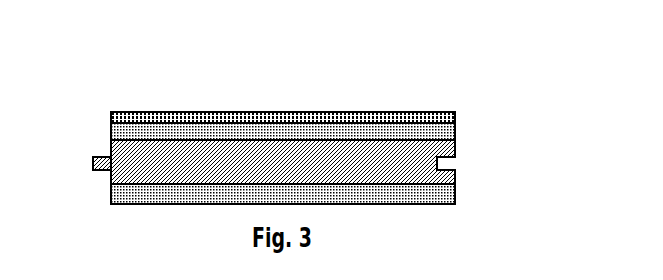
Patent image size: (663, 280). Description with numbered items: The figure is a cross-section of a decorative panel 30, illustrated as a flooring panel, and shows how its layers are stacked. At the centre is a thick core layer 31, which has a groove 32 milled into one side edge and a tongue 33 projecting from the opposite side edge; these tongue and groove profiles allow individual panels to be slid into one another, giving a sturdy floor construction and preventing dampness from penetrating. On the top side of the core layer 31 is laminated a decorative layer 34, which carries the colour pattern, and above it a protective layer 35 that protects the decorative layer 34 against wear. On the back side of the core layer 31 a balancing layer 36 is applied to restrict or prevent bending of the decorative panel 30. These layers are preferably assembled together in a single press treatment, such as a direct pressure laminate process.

The decorative panel 30 is at (207, 103).
The core layer 31 is at (113, 148).
The groove 32 is at (445, 167).
The tongue 33 is at (93, 170).
The decorative layer 34 is at (442, 134).
The protective layer 35 is at (442, 120).
The balancing layer 36 is at (442, 193).